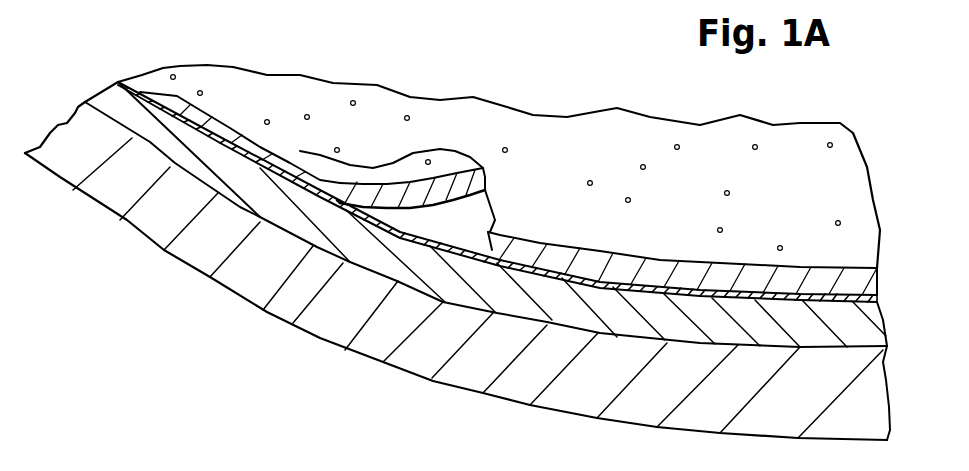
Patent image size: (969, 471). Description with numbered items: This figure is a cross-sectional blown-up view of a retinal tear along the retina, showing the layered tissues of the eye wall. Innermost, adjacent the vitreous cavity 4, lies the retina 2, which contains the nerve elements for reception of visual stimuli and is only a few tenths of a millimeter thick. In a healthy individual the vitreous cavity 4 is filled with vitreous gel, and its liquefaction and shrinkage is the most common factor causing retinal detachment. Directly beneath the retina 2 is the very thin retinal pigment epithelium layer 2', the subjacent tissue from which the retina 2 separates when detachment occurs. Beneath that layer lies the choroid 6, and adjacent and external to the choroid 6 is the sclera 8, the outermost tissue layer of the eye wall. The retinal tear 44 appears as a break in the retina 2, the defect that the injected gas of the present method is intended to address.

The retina 2 is at (508, 180).
The retinal pigment epithelium layer 2' is at (497, 183).
The vitreous cavity 4 is at (780, 147).
The choroid 6 is at (267, 312).
The sclera 8 is at (190, 268).
The retinal tear 44 is at (453, 157).